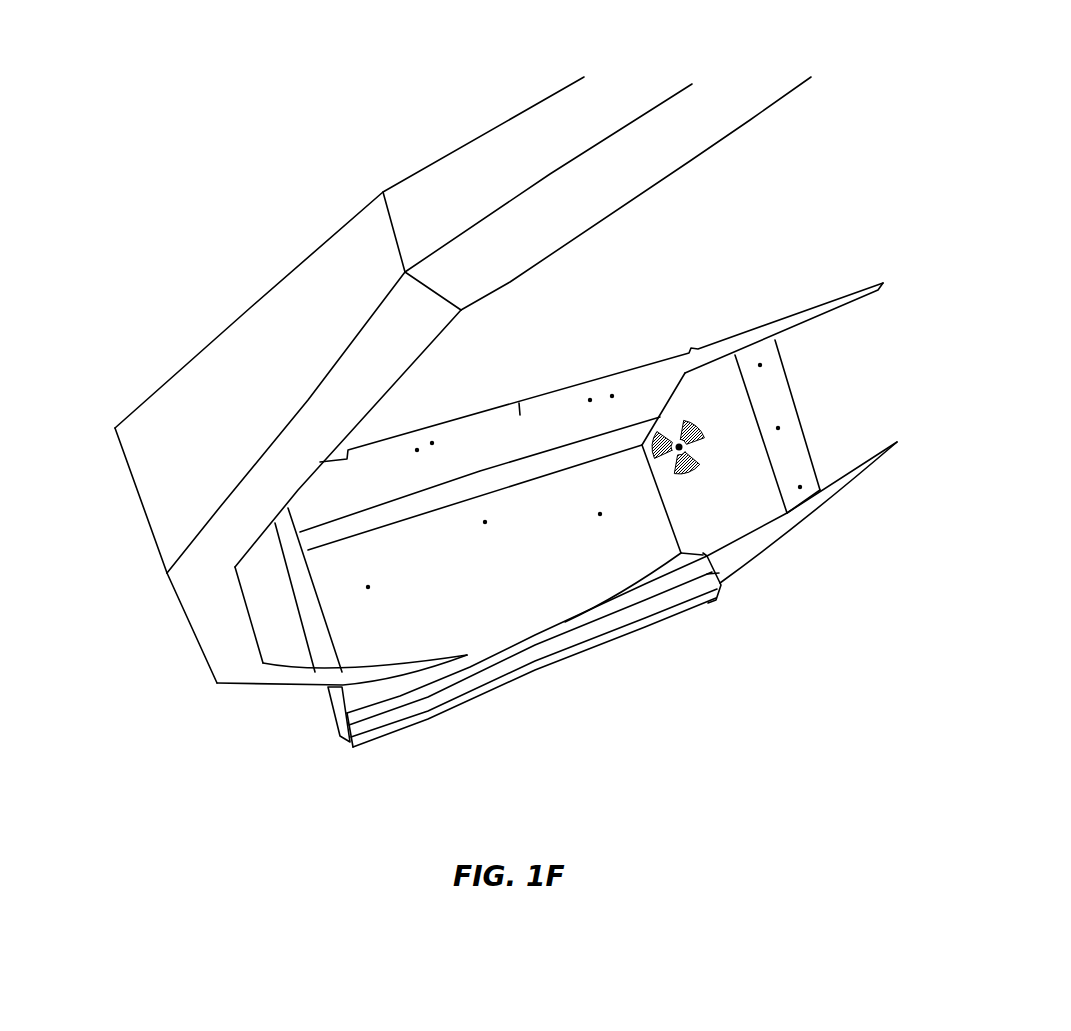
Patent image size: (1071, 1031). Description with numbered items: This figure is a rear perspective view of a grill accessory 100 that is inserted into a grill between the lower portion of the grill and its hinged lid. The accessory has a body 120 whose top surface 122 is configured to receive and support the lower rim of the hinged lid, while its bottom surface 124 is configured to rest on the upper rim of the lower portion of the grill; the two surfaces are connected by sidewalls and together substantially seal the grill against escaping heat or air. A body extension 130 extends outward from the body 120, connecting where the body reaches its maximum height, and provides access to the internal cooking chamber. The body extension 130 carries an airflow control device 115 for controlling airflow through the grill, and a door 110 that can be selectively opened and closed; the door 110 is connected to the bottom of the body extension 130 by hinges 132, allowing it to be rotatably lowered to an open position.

The grill accessory 100 is at (274, 84).
The door 110 is at (547, 667).
The airflow control device 115 is at (670, 430).
The body 120 is at (141, 499).
The top surface 122 is at (274, 271).
The bottom surface 124 is at (211, 634).
The body extension 130 is at (727, 420).
The hinges 132 is at (340, 728).